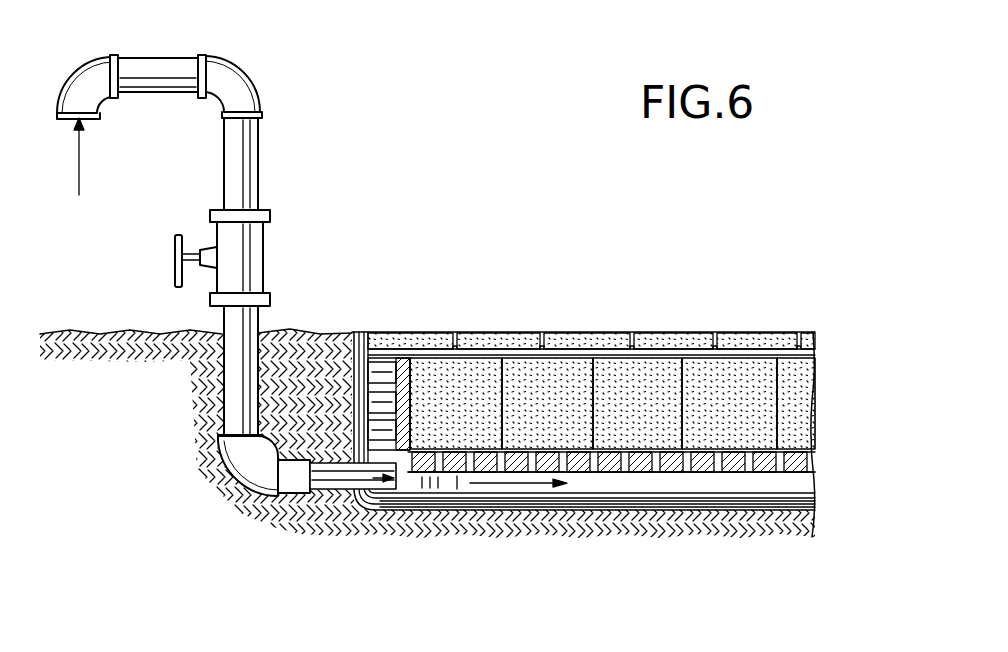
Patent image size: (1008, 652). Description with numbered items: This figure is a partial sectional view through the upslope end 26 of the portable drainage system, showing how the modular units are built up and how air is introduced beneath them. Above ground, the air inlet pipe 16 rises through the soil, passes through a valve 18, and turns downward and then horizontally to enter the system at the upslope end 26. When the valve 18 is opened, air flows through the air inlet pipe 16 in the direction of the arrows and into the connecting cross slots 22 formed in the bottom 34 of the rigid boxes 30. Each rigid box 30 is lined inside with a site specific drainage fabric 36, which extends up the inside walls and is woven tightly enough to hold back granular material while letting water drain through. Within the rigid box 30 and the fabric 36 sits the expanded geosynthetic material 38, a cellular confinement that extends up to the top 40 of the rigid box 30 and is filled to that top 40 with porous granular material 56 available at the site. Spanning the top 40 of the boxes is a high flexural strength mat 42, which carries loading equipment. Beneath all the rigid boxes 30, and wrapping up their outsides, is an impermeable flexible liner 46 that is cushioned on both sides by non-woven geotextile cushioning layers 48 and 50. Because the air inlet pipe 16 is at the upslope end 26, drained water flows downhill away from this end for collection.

The air inlet pipe 16 is at (147, 56).
The valve 18 is at (235, 237).
The upslope end 26 is at (328, 332).
The top of the rigid box 40 is at (392, 342).
The expanded geosynthetic material 38 is at (508, 387).
The high flexural strength mat 42 is at (575, 333).
The porous granular material 56 is at (652, 385).
The site specific drainage fabric 36 is at (748, 447).
The cushioning layer 50 is at (395, 506).
The impermeable flexible liner 46 is at (450, 496).
The connecting cross slots 22 is at (472, 497).
The cushioning layer 48 is at (530, 500).
The bottom of the rigid box 34 is at (613, 470).
The rigid box 30 is at (680, 480).